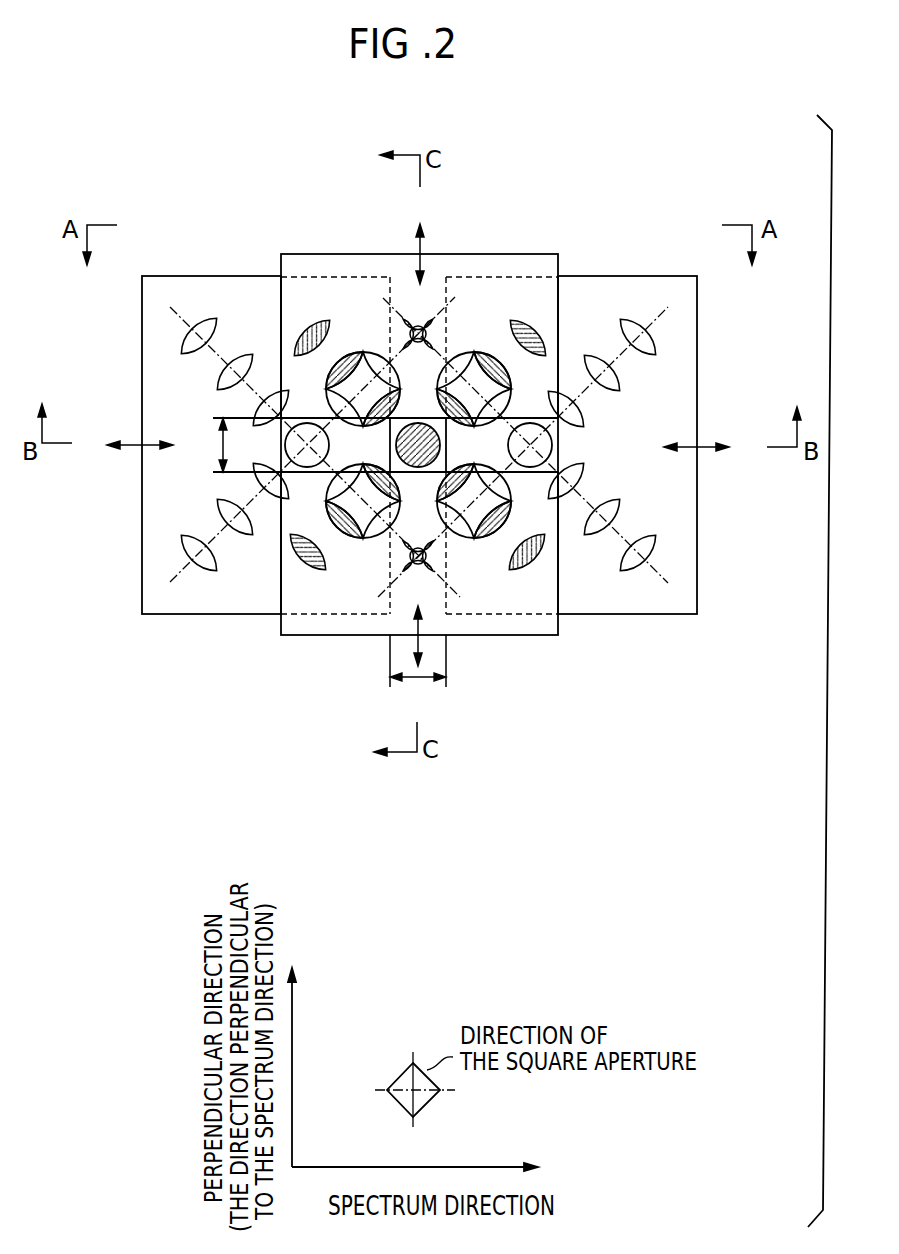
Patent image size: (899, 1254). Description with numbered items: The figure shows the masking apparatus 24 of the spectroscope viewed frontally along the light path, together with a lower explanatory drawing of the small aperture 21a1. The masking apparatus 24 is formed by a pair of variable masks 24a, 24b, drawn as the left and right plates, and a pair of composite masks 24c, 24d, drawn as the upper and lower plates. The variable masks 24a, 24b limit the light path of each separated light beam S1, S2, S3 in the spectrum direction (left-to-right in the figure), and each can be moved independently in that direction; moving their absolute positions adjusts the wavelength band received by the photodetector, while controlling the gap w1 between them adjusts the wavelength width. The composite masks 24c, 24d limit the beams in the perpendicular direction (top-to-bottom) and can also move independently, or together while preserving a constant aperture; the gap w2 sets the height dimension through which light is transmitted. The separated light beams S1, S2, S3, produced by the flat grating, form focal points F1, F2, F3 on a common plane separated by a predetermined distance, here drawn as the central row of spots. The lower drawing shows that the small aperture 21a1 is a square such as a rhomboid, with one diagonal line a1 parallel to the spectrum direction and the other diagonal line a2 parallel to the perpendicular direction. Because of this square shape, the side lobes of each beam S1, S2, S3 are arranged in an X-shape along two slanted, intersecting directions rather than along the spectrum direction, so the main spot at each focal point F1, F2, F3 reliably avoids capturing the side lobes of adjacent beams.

The masking apparatus 24 is at (180, 250).
The variable mask 24a is at (245, 292).
The variable mask 24b is at (628, 292).
The composite mask 24c is at (513, 262).
The composite mask 24d is at (318, 625).
The separated light beam S1 is at (553, 449).
The focal point F1 is at (530, 445).
The separated light beam S2 is at (417, 423).
The focal point F2 is at (418, 445).
The separated light beam S3 is at (305, 470).
The focal point F3 is at (307, 445).
The gap between the variable masks w1 is at (418, 674).
The gap between the composite masks w2 is at (207, 445).
The small aperture 21a1 is at (398, 1073).
The diagonal line a1 is at (455, 1090).
The diagonal line a2 is at (413, 1125).